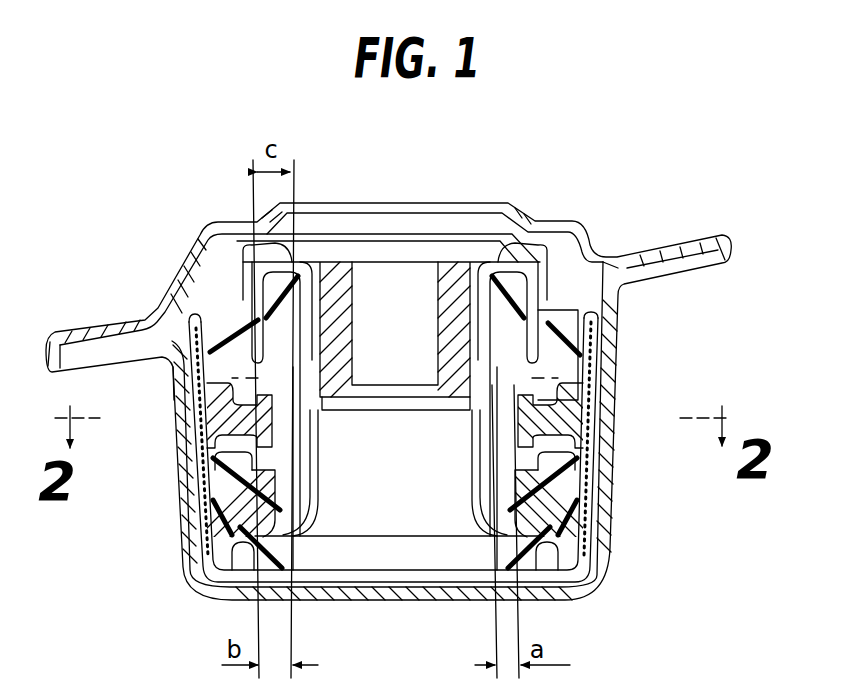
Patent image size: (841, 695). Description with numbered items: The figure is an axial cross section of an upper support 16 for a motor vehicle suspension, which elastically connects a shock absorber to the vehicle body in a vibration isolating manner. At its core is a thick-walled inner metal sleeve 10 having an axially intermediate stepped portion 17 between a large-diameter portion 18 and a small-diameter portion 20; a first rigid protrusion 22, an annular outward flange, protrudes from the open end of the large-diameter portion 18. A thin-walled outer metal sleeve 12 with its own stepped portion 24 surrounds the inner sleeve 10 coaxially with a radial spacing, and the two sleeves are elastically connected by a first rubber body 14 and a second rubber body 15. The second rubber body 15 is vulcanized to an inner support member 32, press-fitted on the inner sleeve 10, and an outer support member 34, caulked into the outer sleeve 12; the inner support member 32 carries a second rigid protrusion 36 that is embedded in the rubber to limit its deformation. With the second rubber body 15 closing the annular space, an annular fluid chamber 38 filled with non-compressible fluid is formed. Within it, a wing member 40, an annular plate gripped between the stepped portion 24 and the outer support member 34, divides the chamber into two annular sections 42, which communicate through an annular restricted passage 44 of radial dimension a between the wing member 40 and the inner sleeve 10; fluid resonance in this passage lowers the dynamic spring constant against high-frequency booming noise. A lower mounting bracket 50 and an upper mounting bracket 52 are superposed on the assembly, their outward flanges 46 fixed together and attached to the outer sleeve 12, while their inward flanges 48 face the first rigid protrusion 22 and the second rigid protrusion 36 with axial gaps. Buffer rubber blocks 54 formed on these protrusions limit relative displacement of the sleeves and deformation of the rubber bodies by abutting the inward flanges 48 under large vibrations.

The inner metal sleeve 10 is at (522, 470).
The outer metal sleeve 12 is at (196, 508).
The first rubber body 14 is at (557, 517).
The second rubber body 15 is at (557, 325).
The upper support 16 is at (178, 156).
The stepped portion 17 is at (467, 410).
The large-diameter portion 18 is at (311, 463).
The small-diameter portion 20 is at (341, 300).
The first rigid protrusion 22 is at (240, 520).
The stepped portion 24 is at (499, 458).
The inner support member 32 is at (462, 333).
The outer support member 34 is at (585, 350).
The second rigid protrusion 36 is at (258, 287).
The annular fluid chamber 38 is at (545, 397).
The wing member 40 is at (227, 430).
The annular sections 42 is at (233, 393).
The annular restricted passage 44 is at (275, 420).
The outward flange 46 is at (94, 322).
The inward flange 48 is at (512, 232).
The lower mounting bracket 50 is at (626, 446).
The upper mounting bracket 52 is at (585, 214).
The buffer rubber blocks 54 is at (496, 256).